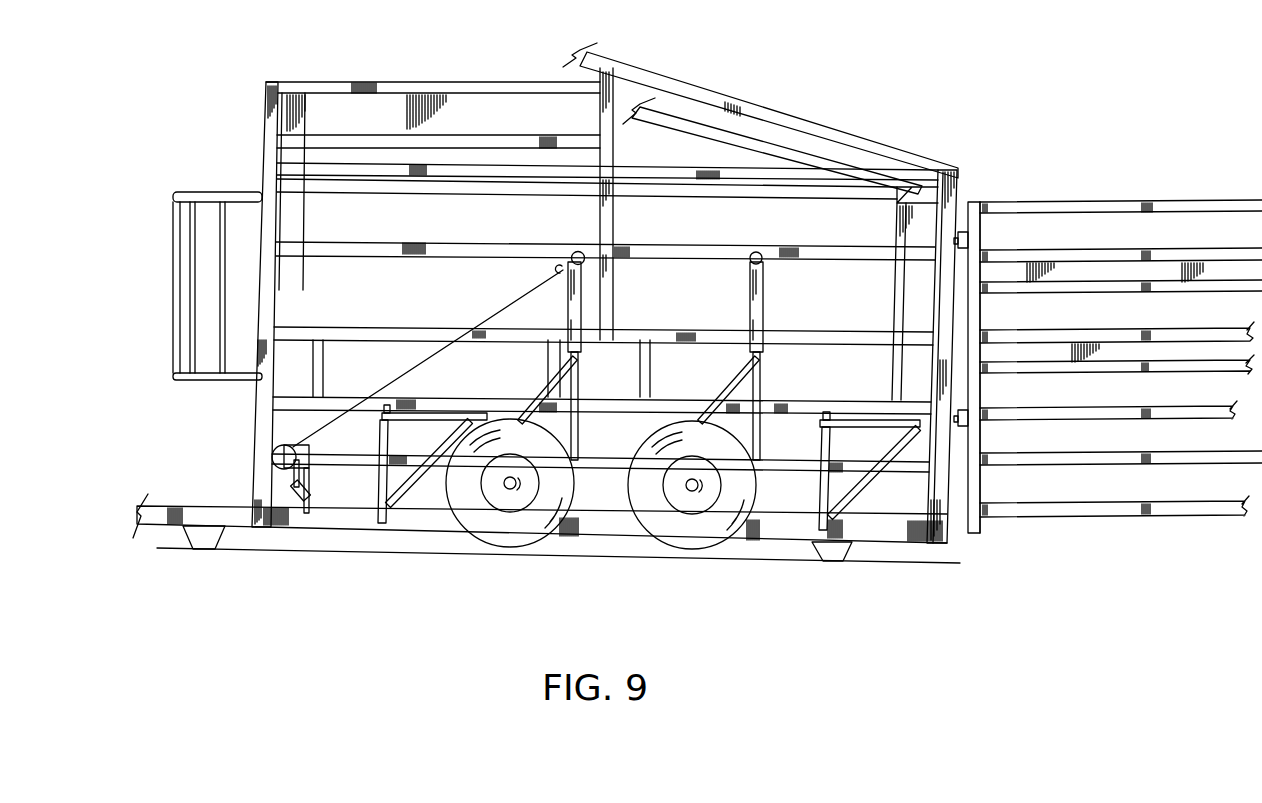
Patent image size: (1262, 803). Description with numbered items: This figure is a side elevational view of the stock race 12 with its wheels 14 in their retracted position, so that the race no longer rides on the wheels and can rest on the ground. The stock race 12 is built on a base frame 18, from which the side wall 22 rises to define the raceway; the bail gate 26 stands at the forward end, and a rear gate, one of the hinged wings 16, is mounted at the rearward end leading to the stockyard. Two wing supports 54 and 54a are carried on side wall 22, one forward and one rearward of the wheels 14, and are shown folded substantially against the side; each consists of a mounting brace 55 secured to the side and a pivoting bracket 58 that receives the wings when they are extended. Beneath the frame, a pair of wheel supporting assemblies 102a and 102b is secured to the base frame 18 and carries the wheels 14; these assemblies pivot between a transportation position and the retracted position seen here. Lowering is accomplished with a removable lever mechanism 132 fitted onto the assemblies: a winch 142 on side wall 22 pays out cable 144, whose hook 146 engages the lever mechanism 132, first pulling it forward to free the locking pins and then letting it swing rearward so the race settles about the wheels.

The stock race 12 is at (380, 78).
The wheels 14 is at (478, 530).
The wings 16 is at (1004, 198).
The base frame 18 is at (871, 544).
The side wall 22 is at (342, 468).
The bail gate 26 is at (188, 384).
The wing support 54 is at (376, 484).
The wing support 54a is at (827, 440).
The mounting brace 55 is at (383, 419).
The bracket 58 is at (449, 409).
The wheel supporting assembly 102a is at (603, 370).
The wheel supporting assembly 102b is at (800, 363).
The lever mechanism 132 is at (771, 293).
The winch 142 is at (280, 470).
The cable 144 is at (497, 308).
The hook 146 is at (571, 252).